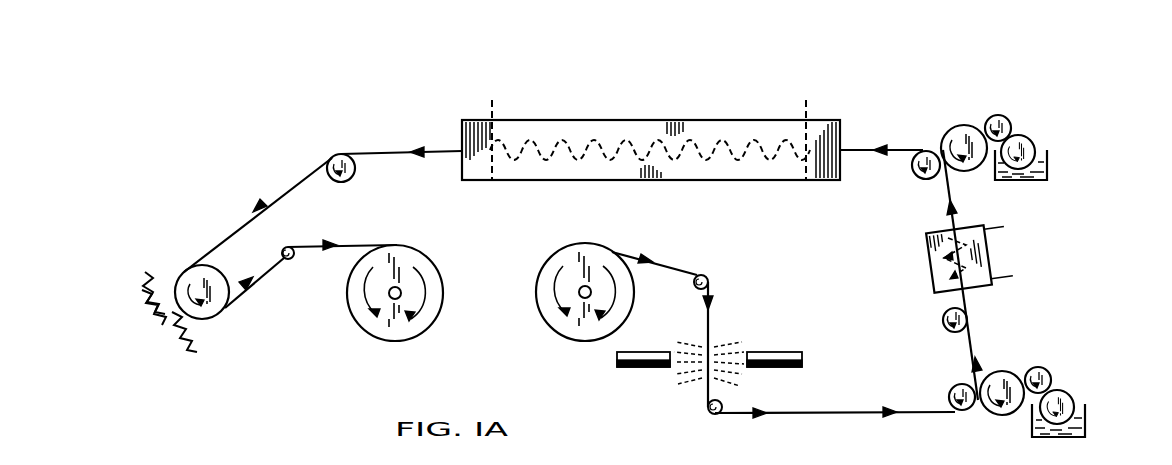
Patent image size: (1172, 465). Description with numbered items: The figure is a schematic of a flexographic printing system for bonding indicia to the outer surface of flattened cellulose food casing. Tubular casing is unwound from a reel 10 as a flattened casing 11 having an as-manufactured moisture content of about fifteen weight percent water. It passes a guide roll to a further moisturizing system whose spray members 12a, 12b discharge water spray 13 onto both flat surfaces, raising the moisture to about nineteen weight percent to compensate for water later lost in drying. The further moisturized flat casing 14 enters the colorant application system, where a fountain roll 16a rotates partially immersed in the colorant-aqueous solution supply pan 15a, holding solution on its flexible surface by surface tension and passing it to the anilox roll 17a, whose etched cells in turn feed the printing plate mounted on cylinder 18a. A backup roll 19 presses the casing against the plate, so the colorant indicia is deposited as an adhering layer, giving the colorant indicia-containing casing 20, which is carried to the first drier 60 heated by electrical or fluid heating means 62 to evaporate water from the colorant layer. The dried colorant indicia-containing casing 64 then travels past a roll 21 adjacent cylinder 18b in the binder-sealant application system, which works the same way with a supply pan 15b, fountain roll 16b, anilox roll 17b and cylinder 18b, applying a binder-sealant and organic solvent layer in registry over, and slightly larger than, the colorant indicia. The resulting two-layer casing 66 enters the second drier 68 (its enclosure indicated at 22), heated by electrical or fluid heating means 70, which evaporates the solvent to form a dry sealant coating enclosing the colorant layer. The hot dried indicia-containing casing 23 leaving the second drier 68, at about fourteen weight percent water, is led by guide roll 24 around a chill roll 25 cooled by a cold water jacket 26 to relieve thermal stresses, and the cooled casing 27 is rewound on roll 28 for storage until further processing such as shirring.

The reel 10 is at (542, 272).
The flattened casing 11 is at (632, 255).
The spray member 12a is at (623, 368).
The spray member 12b is at (782, 350).
The water spray 13 is at (692, 375).
The further moisturized flat casing 14 is at (843, 403).
The colorant-aqueous solution supply pan 15a is at (1087, 410).
The binder-sealant and organic solvent mixture supply pan 15b is at (1048, 167).
The fountain roll 16a is at (1063, 392).
The fountain roll 16b is at (1022, 137).
The anilox roll 17a is at (1040, 363).
The anilox roll 17b is at (1002, 113).
The cylinder 18a is at (993, 417).
The cylinder 18b is at (960, 127).
The backup roll 19 is at (955, 387).
The colorant indicia portion-containing further moisturized flat casing 20 is at (972, 330).
The backing roller 21 is at (920, 176).
The oven bottom / web in oven 22 is at (627, 180).
The dried indicia-containing flat cellulose casing 23 is at (380, 150).
The guide roll 24 is at (343, 182).
The chill roll 25 is at (213, 267).
The cold water jacket 26 is at (147, 317).
The cooled, dried indicia-containing flat casing 27 is at (313, 242).
The rewind roll 28 is at (427, 248).
The first drier 60 is at (990, 250).
The heating means 62 is at (940, 272).
The dried colorant indicia portion-containing casing 64 is at (955, 217).
The flat cellulose casing with colorant under layer and binder-sealant over layer 66 is at (863, 143).
The second drier 68 is at (690, 120).
The heating means 70 is at (573, 133).